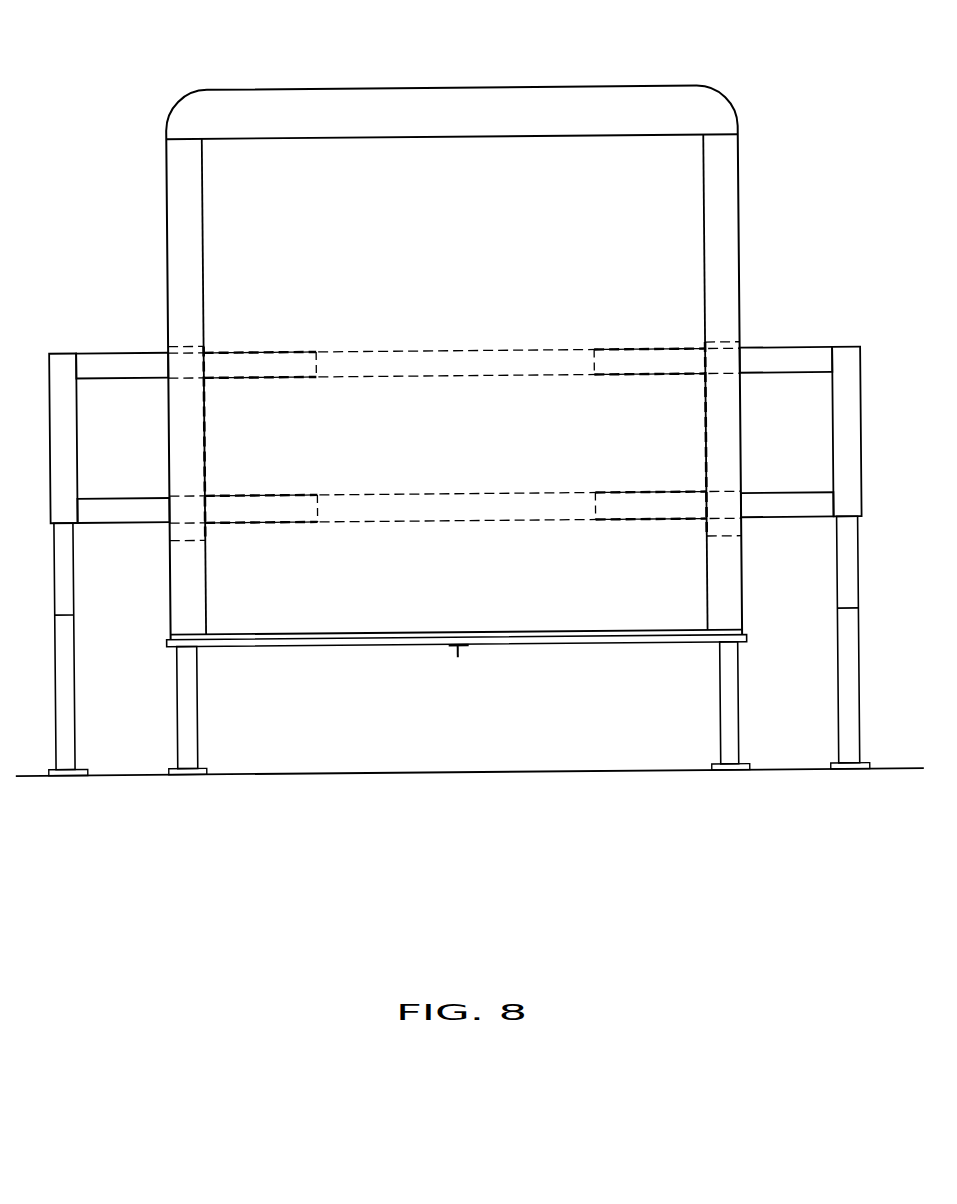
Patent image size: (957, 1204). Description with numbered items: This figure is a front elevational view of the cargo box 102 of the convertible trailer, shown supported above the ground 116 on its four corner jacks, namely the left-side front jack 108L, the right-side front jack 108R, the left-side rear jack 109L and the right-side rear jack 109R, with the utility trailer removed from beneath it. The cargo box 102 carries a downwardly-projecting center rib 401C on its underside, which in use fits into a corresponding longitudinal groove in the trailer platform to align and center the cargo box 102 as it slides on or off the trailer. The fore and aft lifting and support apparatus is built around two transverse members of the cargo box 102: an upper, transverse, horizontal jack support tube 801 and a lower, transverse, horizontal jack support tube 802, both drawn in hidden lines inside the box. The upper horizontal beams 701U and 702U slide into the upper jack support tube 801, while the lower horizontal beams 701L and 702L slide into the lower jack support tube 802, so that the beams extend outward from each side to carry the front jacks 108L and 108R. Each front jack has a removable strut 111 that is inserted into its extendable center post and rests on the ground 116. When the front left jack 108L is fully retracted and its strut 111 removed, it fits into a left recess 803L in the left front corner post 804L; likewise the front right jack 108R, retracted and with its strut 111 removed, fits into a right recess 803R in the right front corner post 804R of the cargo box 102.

The cargo box 102 is at (156, 89).
The right front corner post 804R is at (187, 239).
The left front corner post 804L is at (724, 240).
The right recess 803R is at (203, 459).
The left recess 803L is at (708, 458).
The upper transverse horizontal jack support tube 801 is at (454, 349).
The lower transverse horizontal jack support tube 802 is at (455, 492).
The upper horizontal beam 701U is at (130, 362).
The lower horizontal beam 701L is at (144, 507).
The upper horizontal beam 702U is at (780, 362).
The lower horizontal beam 702L is at (766, 505).
The left-side front jack 108L is at (62, 413).
The right-side front jack 108R is at (849, 413).
The removable strut 111 is at (64, 703).
The left-side rear jack 109L is at (180, 667).
The right-side rear jack 109R is at (726, 666).
The center rib 401C is at (461, 657).
The ground 116 is at (463, 771).